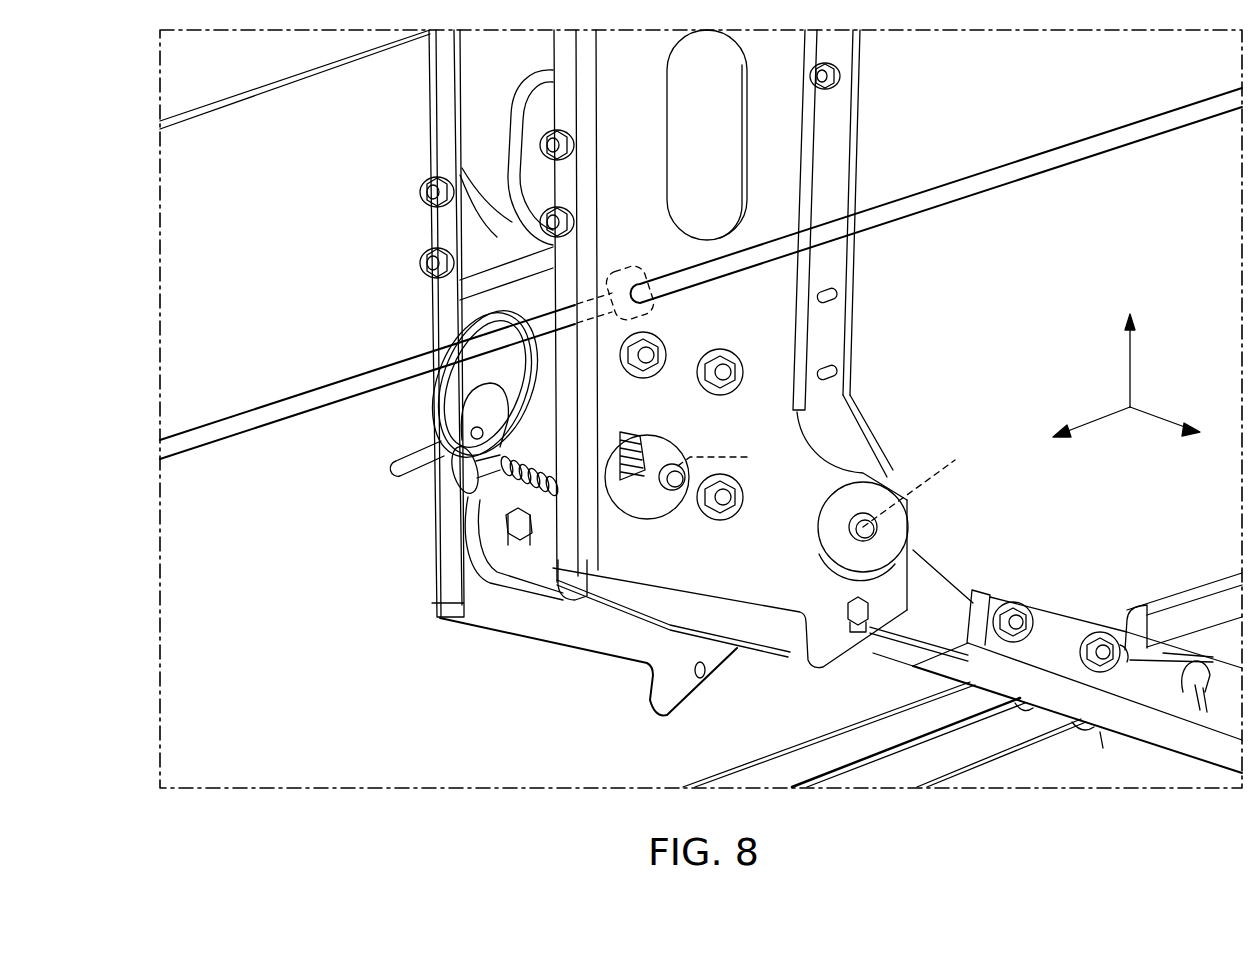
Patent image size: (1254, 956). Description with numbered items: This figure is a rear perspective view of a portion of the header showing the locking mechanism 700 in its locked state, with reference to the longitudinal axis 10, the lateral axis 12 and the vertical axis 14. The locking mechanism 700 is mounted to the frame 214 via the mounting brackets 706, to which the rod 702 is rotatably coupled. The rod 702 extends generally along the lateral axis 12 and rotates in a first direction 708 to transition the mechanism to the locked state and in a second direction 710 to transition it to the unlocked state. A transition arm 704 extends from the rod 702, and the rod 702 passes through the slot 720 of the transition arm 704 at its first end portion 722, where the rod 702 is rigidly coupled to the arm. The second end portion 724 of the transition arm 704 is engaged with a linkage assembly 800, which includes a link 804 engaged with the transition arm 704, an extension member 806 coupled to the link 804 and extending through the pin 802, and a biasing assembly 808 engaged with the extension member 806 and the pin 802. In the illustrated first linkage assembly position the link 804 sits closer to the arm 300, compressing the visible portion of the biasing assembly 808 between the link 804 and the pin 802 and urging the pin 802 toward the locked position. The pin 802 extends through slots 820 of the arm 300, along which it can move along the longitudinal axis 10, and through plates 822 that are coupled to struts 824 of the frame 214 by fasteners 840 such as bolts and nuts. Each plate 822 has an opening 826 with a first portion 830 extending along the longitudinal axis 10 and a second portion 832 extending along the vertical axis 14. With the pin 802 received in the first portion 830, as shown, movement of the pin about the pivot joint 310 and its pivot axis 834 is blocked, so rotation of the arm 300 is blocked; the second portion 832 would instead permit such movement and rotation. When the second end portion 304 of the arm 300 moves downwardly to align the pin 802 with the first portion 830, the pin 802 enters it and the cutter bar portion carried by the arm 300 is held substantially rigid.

The frame 214 is at (279, 88).
The struts 824 is at (433, 127).
The transition arm 704 is at (410, 309).
The first end portion 722 is at (530, 300).
The mounting brackets 706 is at (645, 262).
The rod 702 is at (1147, 133).
The locking mechanism 700 is at (942, 130).
The second direction 710 is at (1055, 128).
The first direction 708 is at (1063, 183).
The slot 720 is at (472, 376).
The linkage assembly 800 is at (388, 450).
The link 804 is at (398, 466).
The second end portion 724 is at (412, 488).
The biasing assembly 808 is at (510, 517).
The extension member 806 is at (560, 507).
The slots 820 is at (533, 527).
The pin 802 is at (533, 532).
The second end portion 304 is at (542, 728).
The fasteners 840 is at (737, 363).
The second portion 832 is at (637, 430).
The opening 826 is at (662, 452).
The first portion 830 is at (733, 461).
The plates 822 is at (673, 500).
The pivot joint 310 is at (925, 532).
The pivot axis 834 is at (937, 475).
The arm 300 is at (1070, 556).
The vertical axis 14 is at (1130, 372).
The lateral axis 12 is at (1100, 417).
The longitudinal axis 10 is at (1160, 417).